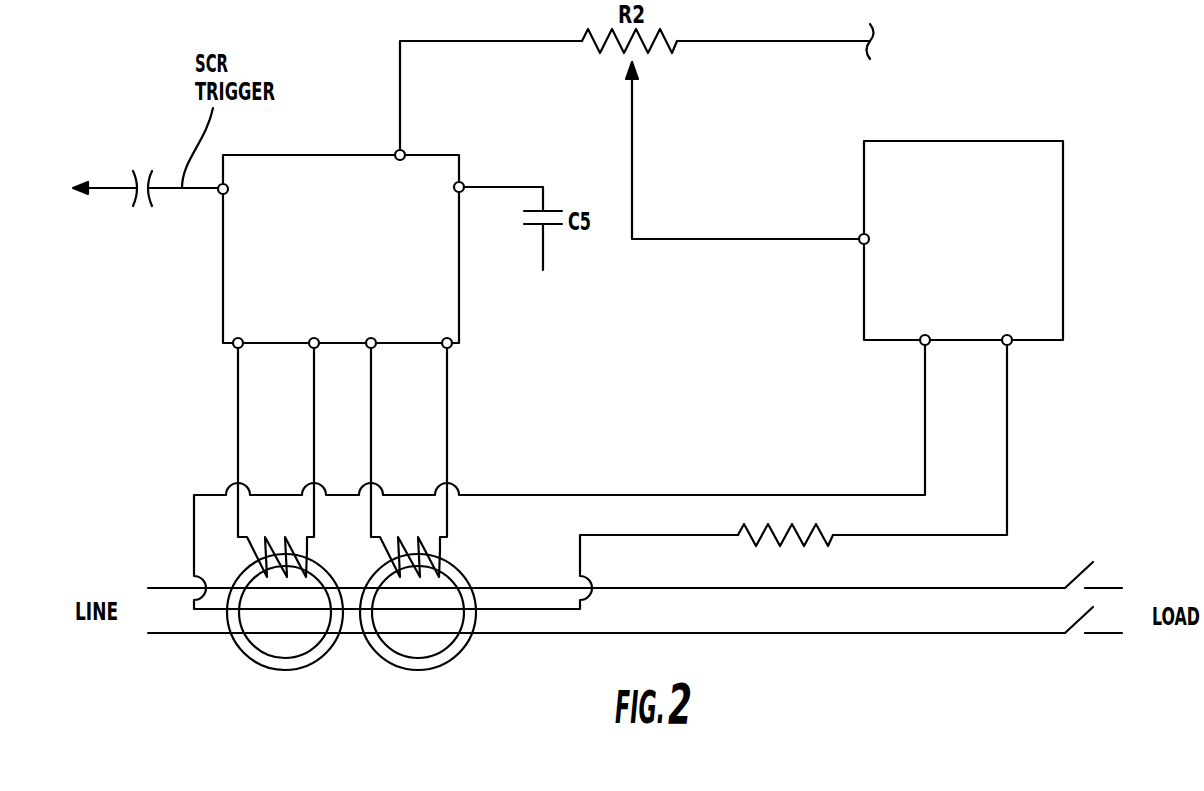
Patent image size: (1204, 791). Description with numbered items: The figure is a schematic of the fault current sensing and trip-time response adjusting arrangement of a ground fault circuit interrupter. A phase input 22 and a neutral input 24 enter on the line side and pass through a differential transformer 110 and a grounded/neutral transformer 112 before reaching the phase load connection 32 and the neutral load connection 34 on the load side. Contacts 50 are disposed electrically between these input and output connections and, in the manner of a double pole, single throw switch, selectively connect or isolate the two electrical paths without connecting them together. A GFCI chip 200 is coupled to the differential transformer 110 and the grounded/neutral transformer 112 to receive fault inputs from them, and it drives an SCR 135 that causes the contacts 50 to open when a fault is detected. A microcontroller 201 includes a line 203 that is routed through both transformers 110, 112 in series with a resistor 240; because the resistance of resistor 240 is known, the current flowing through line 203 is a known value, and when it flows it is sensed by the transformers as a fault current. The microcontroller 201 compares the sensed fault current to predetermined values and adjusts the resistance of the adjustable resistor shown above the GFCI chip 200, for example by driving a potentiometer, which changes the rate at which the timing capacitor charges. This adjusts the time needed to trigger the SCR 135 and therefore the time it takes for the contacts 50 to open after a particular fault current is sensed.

The GFCI chip 200 is at (361, 281).
The microcontroller 201 is at (984, 272).
The line 203 is at (587, 495).
The resistor 240 is at (817, 541).
The SCR 135 is at (126, 191).
The differential transformer 110 is at (287, 685).
The grounded/neutral transformer 112 is at (420, 685).
The phase input 22 is at (595, 591).
The neutral input 24 is at (595, 636).
The phase load connection 32 is at (1106, 585).
The neutral load connection 34 is at (1106, 630).
The contacts 50 is at (1071, 650).